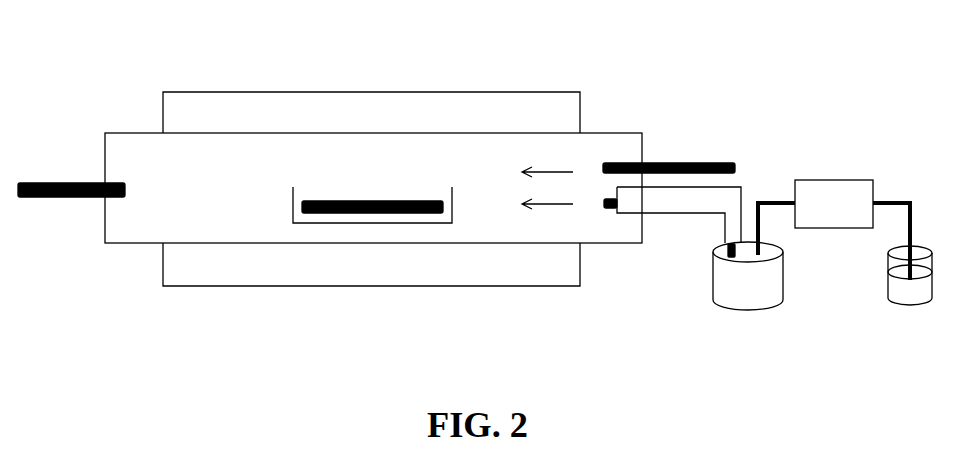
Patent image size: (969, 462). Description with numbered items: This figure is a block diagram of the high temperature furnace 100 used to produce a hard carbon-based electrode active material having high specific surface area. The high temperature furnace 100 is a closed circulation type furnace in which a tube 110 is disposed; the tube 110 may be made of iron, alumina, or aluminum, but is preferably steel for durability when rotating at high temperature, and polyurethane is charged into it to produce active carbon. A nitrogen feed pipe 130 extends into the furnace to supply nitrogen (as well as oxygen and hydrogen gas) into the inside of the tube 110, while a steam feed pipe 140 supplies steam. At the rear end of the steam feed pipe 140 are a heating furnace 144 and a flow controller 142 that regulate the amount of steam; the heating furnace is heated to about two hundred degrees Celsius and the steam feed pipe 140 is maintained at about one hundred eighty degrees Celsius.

The high temperature furnace 100 is at (218, 97).
The tube 110 is at (135, 241).
The nitrogen feed pipe 130 is at (682, 161).
The steam feed pipe 140 is at (670, 208).
The flow controller 142 is at (842, 190).
The heating furnace 144 is at (745, 299).